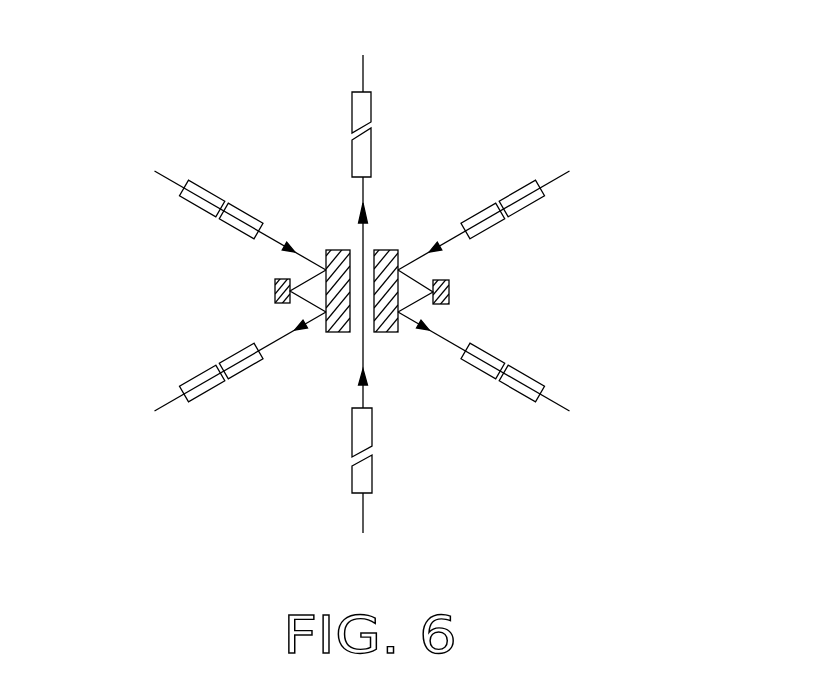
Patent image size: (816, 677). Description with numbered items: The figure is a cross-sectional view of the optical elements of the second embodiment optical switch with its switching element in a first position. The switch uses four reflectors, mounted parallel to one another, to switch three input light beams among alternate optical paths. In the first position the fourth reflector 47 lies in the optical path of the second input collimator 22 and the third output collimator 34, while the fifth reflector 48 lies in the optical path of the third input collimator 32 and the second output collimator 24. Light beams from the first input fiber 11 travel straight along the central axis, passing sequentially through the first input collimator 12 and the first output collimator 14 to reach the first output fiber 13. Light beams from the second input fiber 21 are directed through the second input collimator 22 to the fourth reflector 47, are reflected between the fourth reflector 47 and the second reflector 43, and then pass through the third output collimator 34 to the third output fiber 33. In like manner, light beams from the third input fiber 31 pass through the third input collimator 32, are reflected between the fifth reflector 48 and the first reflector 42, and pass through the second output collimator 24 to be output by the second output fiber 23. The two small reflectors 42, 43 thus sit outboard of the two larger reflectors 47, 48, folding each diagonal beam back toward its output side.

The first input fiber 11 is at (363, 503).
The first input collimator 12 is at (372, 425).
The first output fiber 13 is at (363, 72).
The first output collimator 14 is at (371, 143).
The second input fiber 21 is at (157, 172).
The second input collimator 22 is at (245, 210).
The second output fiber 23 is at (553, 403).
The second output collimator 24 is at (485, 348).
The third input fiber 31 is at (555, 182).
The third input collimator 32 is at (490, 227).
The third output fiber 33 is at (172, 397).
The third output collimator 34 is at (233, 350).
The first reflector 42 is at (452, 285).
The second reflector 43 is at (273, 282).
The fourth reflector 47 is at (338, 249).
The fifth reflector 48 is at (387, 250).